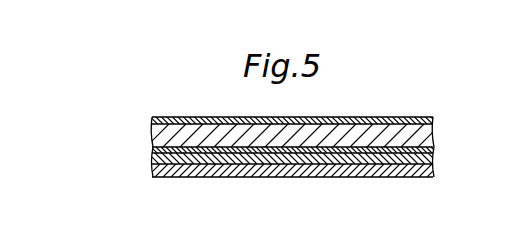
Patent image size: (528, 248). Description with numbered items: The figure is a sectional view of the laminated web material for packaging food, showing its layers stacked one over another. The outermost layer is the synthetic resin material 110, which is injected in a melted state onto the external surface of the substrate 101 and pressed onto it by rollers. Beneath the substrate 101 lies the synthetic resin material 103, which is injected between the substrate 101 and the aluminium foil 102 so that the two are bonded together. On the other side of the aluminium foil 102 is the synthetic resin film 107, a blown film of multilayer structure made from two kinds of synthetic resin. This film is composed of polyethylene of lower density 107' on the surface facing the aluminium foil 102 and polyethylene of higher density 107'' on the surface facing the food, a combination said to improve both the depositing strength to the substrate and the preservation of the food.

The synthetic resin material 110 is at (433, 119).
The substrate 101 is at (432, 135).
The synthetic resin material 103 is at (433, 150).
The aluminium foil 102 is at (269, 170).
The synthetic resin film 107 is at (251, 170).
The polyethylene of lower density 107' is at (274, 156).
The polyethylene of higher density 107'' is at (275, 177).